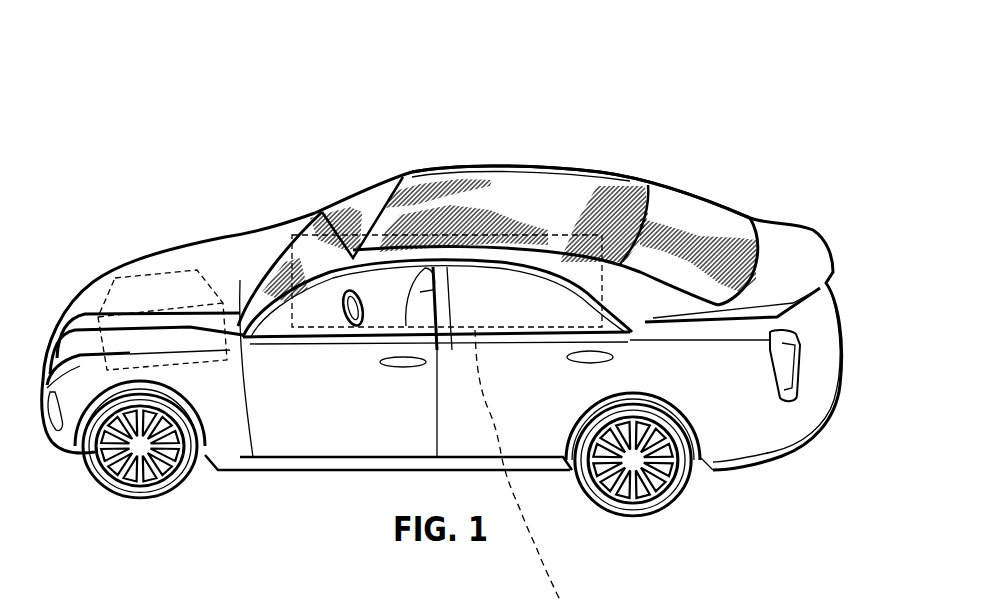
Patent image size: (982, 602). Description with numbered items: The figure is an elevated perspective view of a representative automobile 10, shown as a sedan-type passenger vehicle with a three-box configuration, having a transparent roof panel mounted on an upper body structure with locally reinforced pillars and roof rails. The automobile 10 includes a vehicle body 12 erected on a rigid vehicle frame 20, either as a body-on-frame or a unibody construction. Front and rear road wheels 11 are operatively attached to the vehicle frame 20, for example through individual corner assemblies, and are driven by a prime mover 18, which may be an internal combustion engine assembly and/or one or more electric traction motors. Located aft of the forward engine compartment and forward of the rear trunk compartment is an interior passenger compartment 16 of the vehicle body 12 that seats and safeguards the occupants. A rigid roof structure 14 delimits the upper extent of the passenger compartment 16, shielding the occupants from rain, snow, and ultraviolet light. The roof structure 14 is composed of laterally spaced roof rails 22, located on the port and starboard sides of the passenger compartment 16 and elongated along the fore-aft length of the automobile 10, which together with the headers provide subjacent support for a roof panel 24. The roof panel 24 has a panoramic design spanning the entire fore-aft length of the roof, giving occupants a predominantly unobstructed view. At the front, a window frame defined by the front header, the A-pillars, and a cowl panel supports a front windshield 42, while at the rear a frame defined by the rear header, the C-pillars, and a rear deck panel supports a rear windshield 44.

The automobile 10 is at (134, 96).
The road wheels 11 is at (123, 495).
The vehicle body 12 is at (139, 250).
The roof structure 14 is at (400, 172).
The interior passenger compartment 16 is at (313, 208).
The prime mover 18 is at (100, 305).
The vehicle frame 20 is at (307, 232).
The roof rails 22 is at (515, 175).
The roof panel 24 is at (545, 180).
The front windshield 42 is at (370, 207).
The rear windshield 44 is at (688, 210).